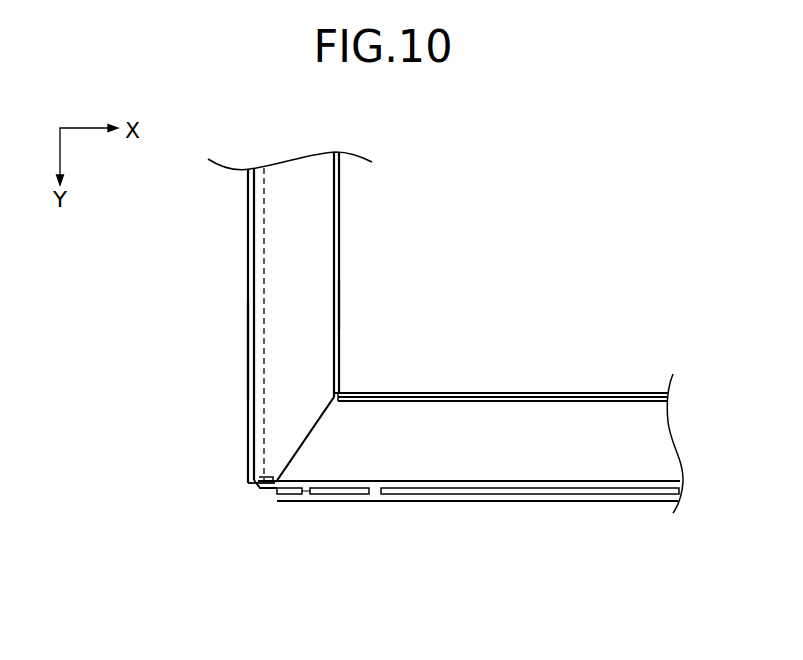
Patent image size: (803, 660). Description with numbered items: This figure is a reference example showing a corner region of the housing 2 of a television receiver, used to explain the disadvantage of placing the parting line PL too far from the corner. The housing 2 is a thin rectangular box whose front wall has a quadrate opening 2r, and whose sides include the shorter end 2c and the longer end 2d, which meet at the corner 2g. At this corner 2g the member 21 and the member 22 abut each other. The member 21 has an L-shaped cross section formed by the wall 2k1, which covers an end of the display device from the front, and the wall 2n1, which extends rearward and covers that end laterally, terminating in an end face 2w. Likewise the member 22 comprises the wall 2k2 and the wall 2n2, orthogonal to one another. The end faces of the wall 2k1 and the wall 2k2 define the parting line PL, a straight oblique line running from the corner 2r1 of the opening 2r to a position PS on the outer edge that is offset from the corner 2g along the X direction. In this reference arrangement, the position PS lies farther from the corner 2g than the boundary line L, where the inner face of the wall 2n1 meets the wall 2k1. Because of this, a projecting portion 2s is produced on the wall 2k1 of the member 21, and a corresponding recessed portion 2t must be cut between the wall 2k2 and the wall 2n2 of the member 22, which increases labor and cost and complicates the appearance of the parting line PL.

The housing 2 is at (541, 249).
The member 21 is at (238, 212).
The member 22 is at (576, 514).
The boundary line L is at (264, 198).
The end 2c is at (247, 245).
The wall 2k1 is at (310, 262).
The opening 2r is at (339, 307).
The wall 2n1 is at (247, 350).
The corner 2r1 is at (337, 394).
The wall 2k2 is at (497, 410).
The parting line PL is at (304, 428).
The recessed portion 2t is at (272, 484).
The corner 2g is at (258, 487).
The end face 2w is at (253, 489).
The position PS is at (282, 496).
The projecting portion 2s is at (310, 486).
The end 2d is at (305, 491).
The wall 2n2 is at (455, 490).